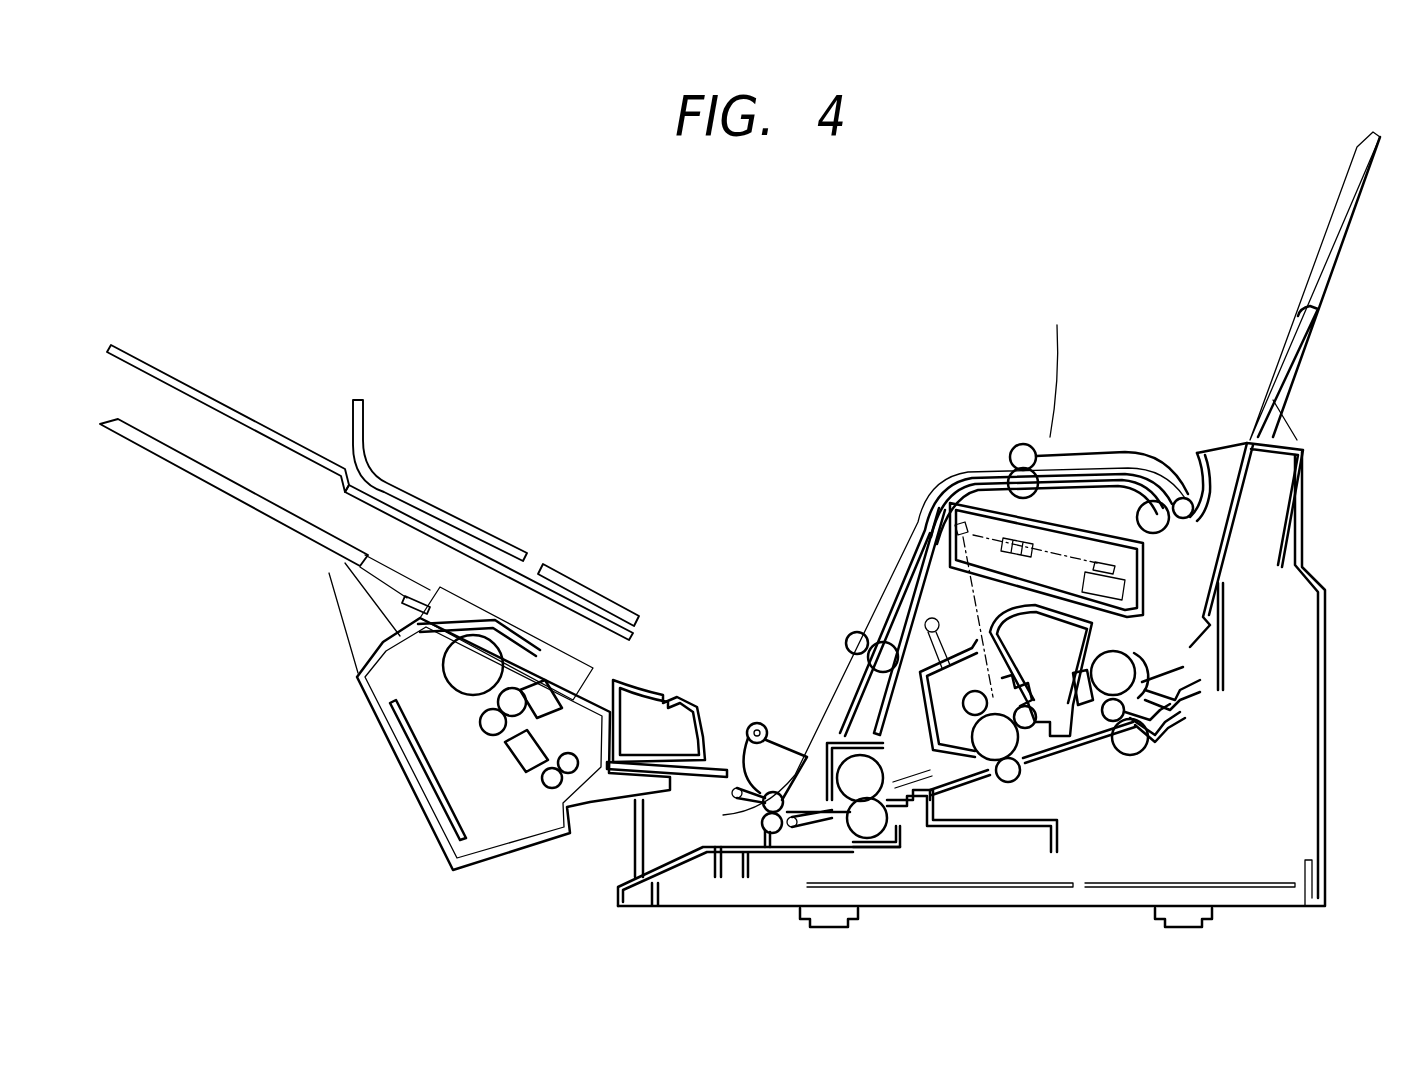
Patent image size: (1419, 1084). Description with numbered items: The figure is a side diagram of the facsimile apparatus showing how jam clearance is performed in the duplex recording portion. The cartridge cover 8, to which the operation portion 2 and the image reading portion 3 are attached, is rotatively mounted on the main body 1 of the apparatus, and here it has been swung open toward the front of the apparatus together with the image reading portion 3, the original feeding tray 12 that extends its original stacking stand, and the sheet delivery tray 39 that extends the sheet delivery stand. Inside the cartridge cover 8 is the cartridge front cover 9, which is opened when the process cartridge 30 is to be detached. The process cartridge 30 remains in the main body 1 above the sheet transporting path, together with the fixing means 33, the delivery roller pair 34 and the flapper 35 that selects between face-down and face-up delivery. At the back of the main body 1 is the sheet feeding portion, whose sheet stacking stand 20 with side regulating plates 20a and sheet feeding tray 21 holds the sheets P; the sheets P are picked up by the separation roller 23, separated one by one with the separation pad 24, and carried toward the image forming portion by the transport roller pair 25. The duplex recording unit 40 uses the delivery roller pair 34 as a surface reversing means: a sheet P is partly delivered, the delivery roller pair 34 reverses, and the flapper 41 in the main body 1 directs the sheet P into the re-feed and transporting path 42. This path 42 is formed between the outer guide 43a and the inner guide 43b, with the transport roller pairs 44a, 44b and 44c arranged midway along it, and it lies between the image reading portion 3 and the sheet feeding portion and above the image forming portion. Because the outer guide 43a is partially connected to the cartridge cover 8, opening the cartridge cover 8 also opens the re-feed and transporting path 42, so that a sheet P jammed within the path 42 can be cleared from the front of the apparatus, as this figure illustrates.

The main body 1 is at (1292, 537).
The operation portion 2 is at (373, 703).
The image reading portion 3 is at (432, 785).
The cartridge cover 8 is at (437, 527).
The cartridge front cover 9 is at (920, 587).
The original feeding tray 12 is at (203, 478).
The sheet stacking stand 20 is at (1163, 698).
The side regulating plates 20a is at (1218, 448).
The sheet feeding tray 21 is at (1332, 235).
The separation roller 23 is at (1125, 672).
The separation pad 24 is at (1168, 722).
The transport roller pair 25 is at (1130, 744).
The process cartridge 30 is at (1015, 653).
The fixing means 33 is at (885, 852).
The delivery roller pair 34 is at (770, 833).
The flapper 35 is at (738, 790).
The sheet delivery tray 39 is at (236, 408).
The duplex recording unit 40 is at (1056, 369).
The flapper 41 is at (812, 822).
The re-feed and transporting path 42 is at (1133, 466).
The outer guide 43a is at (565, 572).
The inner guide 43b is at (1067, 482).
The transport roller pair 44a is at (852, 632).
The transport roller pair 44b is at (1018, 444).
The transport roller pair 44c is at (1182, 496).
The sheet P is at (953, 472).